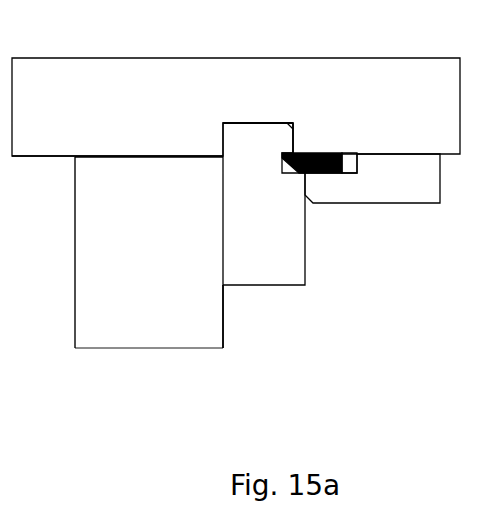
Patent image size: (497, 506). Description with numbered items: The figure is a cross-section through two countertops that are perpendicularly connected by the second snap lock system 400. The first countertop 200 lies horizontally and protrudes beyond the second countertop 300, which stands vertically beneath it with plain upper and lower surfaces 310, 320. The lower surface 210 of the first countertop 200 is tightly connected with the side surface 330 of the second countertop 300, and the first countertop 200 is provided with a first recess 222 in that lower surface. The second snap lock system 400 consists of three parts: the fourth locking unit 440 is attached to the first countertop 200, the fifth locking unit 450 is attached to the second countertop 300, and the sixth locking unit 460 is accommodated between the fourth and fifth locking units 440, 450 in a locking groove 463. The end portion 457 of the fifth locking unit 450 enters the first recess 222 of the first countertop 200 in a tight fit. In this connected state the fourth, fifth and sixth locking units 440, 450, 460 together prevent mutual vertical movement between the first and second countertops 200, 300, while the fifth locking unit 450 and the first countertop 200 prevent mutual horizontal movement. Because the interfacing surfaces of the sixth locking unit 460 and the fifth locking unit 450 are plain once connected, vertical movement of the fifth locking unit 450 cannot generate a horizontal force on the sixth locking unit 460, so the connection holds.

The first countertop 200 is at (168, 98).
The lower surface of the first countertop 210 is at (42, 155).
The first recess 222 is at (238, 121).
The second countertop 300 is at (143, 300).
The upper surface of the second countertop 310 is at (80, 300).
The lower surface of the second countertop 320 is at (224, 313).
The side surface of the second countertop 330 is at (160, 158).
The second snap lock system 400 is at (337, 243).
The fourth locking unit 440 is at (392, 182).
The fifth locking unit 450 is at (263, 245).
The end portion of the fifth locking unit 457 is at (250, 145).
The sixth locking unit 460 is at (317, 152).
The locking groove 463 is at (348, 168).